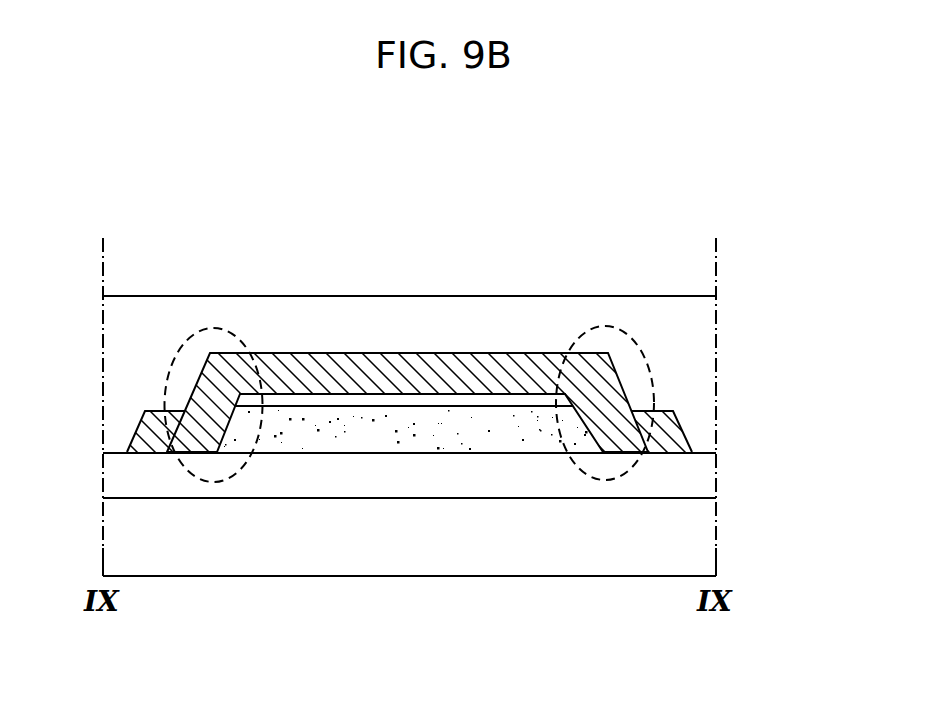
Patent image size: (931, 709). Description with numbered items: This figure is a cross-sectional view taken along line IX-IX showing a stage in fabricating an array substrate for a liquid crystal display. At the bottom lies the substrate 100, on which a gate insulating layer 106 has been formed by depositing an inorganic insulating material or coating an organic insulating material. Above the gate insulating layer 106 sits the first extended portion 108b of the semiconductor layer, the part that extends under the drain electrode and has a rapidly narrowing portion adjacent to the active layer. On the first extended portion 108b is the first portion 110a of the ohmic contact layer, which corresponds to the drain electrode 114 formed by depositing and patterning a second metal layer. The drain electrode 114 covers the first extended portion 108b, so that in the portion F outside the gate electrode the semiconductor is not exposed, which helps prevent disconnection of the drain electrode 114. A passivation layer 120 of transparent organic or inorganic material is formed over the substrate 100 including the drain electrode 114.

The substrate 100 is at (441, 547).
The gate insulating layer 106 is at (698, 473).
The first extended portion 108b is at (453, 422).
The first portion 110a is at (492, 397).
The drain electrode 114 is at (320, 353).
The passivation layer 120 is at (372, 310).
The portion F is at (212, 328).